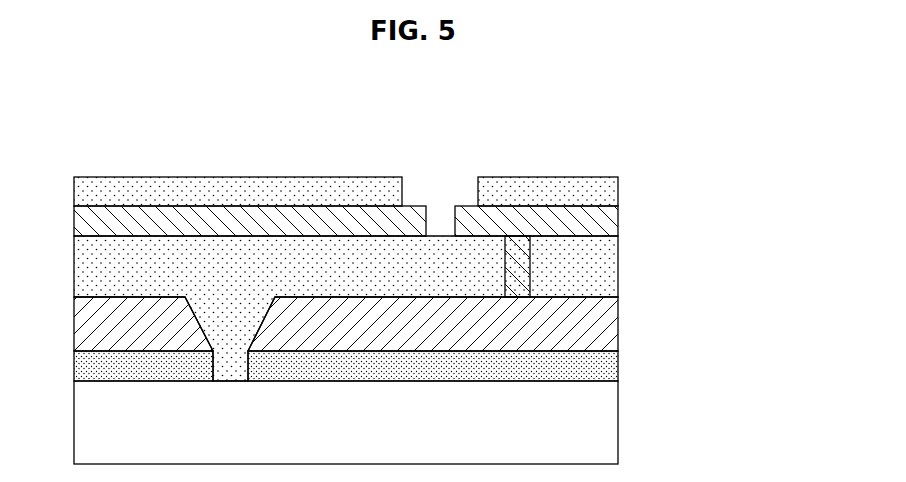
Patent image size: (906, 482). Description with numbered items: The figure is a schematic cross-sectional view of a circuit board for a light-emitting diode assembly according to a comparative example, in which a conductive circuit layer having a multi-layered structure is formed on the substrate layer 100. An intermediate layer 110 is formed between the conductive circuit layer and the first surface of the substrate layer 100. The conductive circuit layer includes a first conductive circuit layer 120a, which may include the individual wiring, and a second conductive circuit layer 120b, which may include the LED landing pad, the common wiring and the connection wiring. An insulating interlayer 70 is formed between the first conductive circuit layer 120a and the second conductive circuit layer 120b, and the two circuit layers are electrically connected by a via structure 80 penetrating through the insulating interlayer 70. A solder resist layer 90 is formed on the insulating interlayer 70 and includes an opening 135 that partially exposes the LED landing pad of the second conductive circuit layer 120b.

The substrate layer 100 is at (612, 428).
The intermediate layer 110 is at (612, 360).
The first conductive circuit layer 120a is at (612, 320).
The insulating interlayer 70 is at (612, 270).
The via structure 80 is at (523, 272).
The second conductive circuit layer 120b is at (612, 218).
The solder resist layer 90 is at (612, 188).
The opening 135 is at (467, 178).